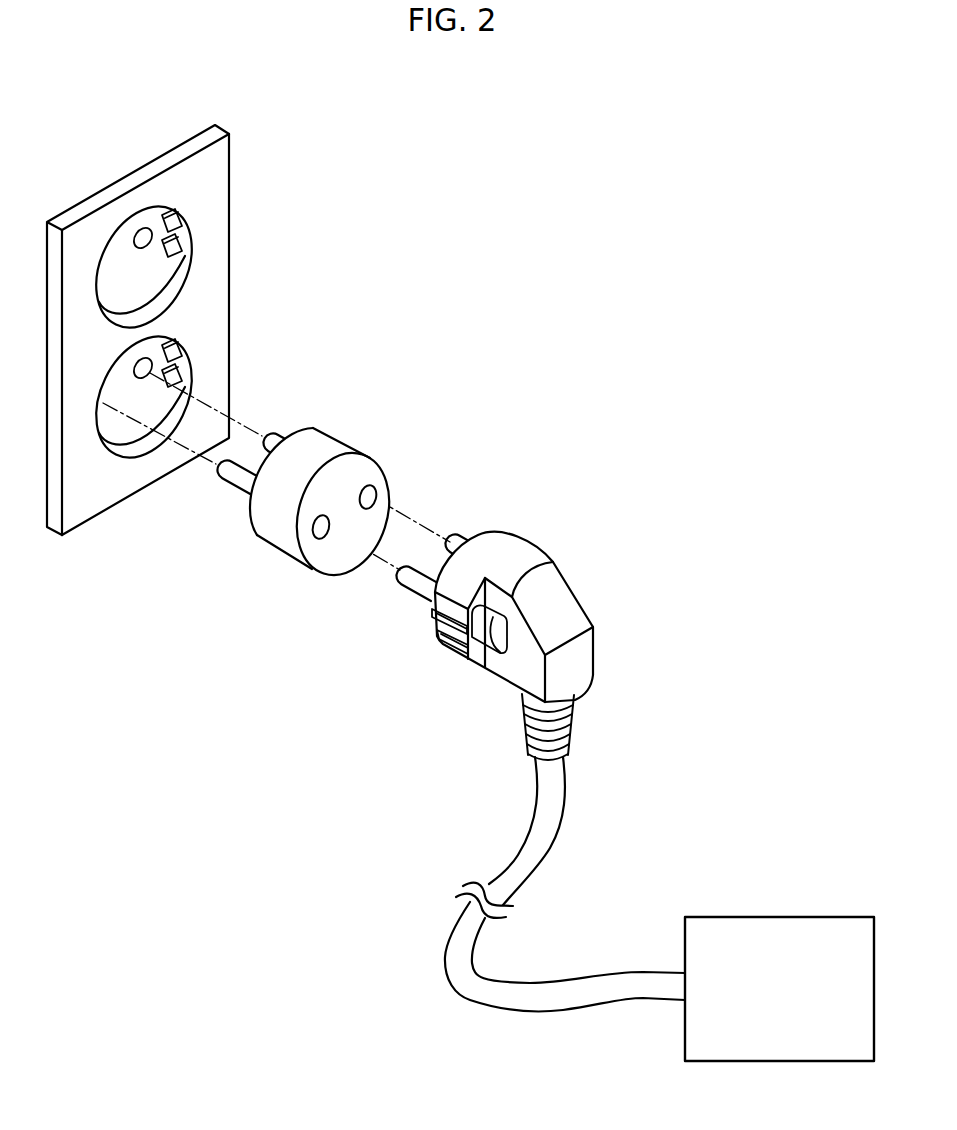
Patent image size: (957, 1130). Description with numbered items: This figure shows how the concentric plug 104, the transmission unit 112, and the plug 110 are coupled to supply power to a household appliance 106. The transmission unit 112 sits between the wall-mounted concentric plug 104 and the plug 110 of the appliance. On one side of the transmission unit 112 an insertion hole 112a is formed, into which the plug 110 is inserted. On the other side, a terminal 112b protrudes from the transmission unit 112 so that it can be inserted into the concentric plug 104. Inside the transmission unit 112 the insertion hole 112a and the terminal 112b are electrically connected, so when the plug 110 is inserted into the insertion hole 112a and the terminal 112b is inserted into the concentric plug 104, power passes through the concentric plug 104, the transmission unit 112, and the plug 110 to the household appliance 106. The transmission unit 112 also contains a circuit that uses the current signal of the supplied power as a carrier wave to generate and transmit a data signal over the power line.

The concentric plug 104 is at (215, 185).
The household appliance 106 is at (778, 917).
The plug 110 is at (512, 547).
The transmission unit 112 is at (343, 474).
The insertion hole 112a is at (379, 497).
The terminal 112b is at (243, 474).